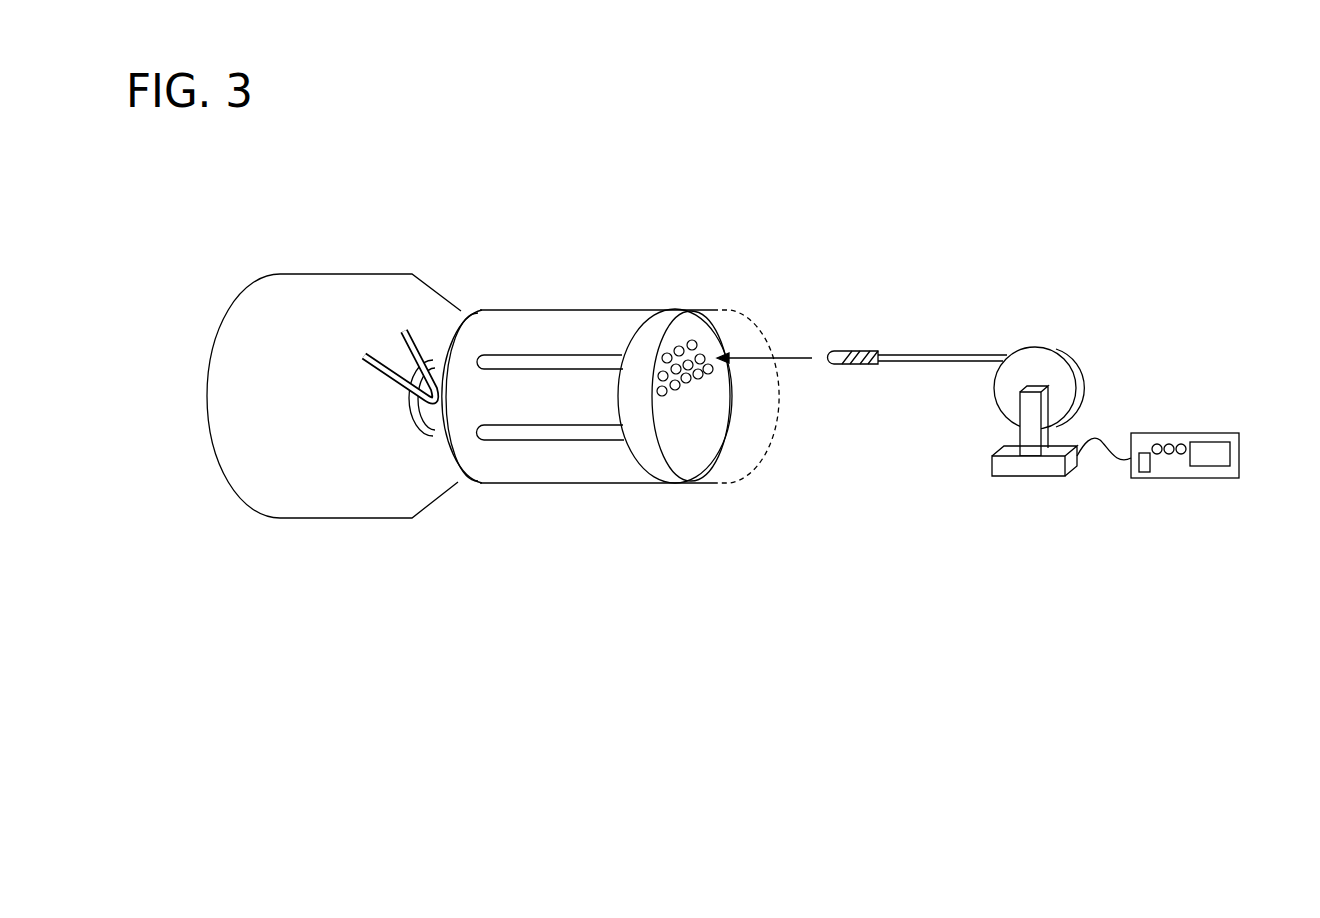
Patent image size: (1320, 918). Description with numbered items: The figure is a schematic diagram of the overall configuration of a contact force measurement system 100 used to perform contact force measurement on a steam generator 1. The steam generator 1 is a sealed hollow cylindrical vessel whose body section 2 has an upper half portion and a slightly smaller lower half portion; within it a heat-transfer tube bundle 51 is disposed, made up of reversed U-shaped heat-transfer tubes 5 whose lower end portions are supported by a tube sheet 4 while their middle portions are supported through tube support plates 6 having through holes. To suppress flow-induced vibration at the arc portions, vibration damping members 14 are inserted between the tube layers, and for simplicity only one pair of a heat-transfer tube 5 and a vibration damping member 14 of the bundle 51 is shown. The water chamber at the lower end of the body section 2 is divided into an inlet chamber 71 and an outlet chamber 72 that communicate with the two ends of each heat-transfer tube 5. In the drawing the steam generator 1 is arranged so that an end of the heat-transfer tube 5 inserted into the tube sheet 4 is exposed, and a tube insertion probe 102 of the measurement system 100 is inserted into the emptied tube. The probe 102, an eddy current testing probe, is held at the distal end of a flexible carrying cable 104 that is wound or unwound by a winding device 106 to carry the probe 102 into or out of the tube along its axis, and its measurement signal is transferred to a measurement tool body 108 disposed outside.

The steam generator 1 is at (688, 281).
The body section 2 is at (358, 274).
The tube sheet 4 is at (633, 484).
The heat-transfer tube 5 is at (553, 350).
The tube support plate 6 is at (452, 485).
The vibration damping member 14 is at (383, 378).
The heat-transfer tube bundle 51 is at (401, 358).
The inlet chamber 71 is at (760, 460).
The outlet chamber 72 is at (746, 396).
The contact force measurement system 100 is at (1106, 197).
The tube insertion probe 102 is at (853, 351).
The carrying cable 104 is at (935, 355).
The winding device 106 is at (1074, 352).
The measurement tool body 108 is at (1180, 478).